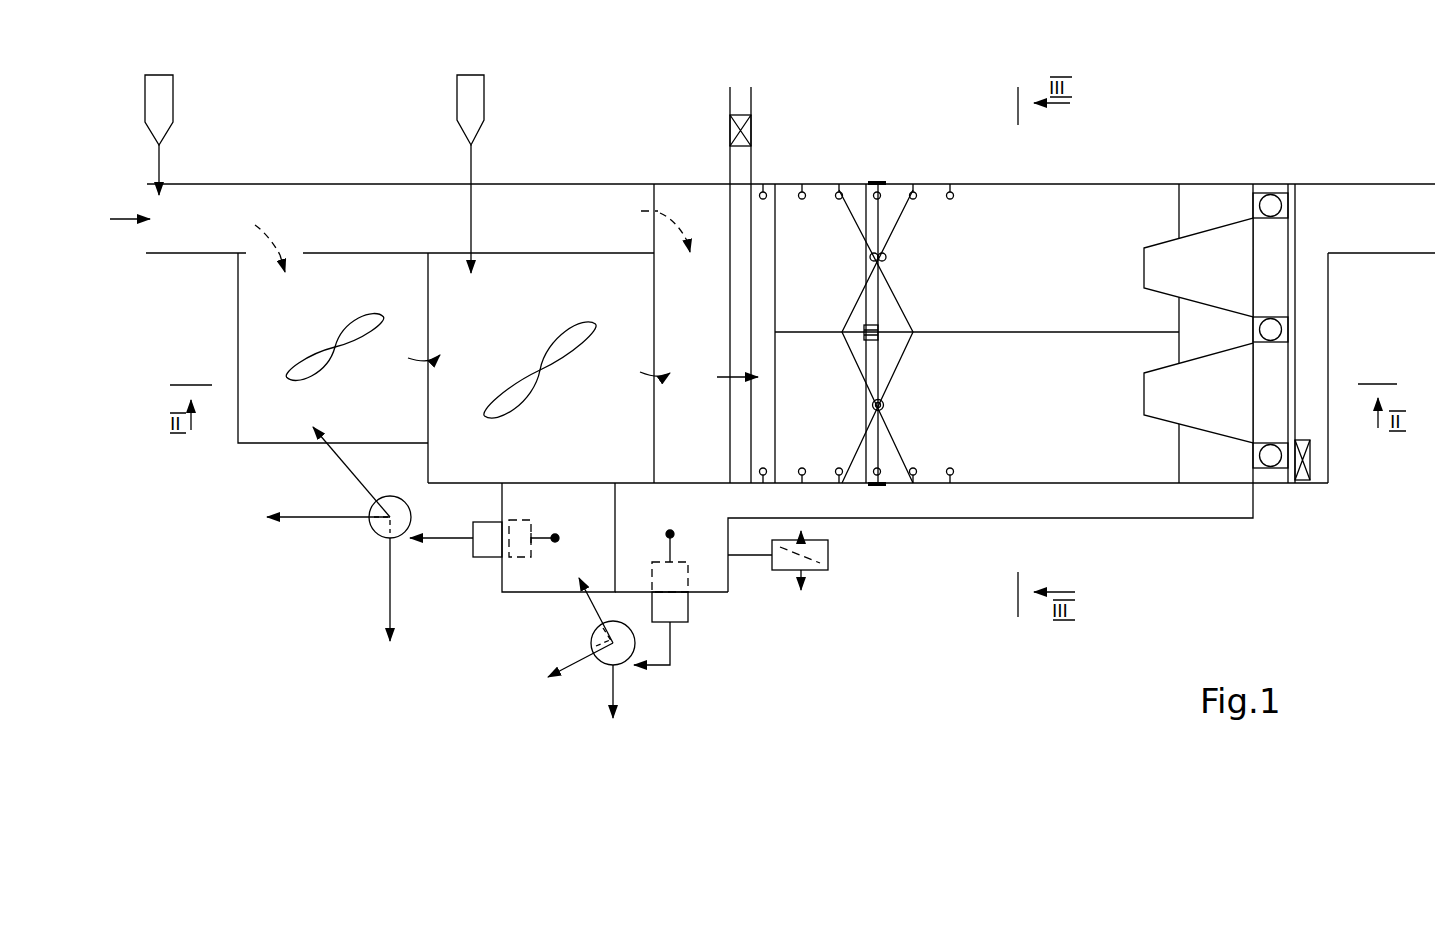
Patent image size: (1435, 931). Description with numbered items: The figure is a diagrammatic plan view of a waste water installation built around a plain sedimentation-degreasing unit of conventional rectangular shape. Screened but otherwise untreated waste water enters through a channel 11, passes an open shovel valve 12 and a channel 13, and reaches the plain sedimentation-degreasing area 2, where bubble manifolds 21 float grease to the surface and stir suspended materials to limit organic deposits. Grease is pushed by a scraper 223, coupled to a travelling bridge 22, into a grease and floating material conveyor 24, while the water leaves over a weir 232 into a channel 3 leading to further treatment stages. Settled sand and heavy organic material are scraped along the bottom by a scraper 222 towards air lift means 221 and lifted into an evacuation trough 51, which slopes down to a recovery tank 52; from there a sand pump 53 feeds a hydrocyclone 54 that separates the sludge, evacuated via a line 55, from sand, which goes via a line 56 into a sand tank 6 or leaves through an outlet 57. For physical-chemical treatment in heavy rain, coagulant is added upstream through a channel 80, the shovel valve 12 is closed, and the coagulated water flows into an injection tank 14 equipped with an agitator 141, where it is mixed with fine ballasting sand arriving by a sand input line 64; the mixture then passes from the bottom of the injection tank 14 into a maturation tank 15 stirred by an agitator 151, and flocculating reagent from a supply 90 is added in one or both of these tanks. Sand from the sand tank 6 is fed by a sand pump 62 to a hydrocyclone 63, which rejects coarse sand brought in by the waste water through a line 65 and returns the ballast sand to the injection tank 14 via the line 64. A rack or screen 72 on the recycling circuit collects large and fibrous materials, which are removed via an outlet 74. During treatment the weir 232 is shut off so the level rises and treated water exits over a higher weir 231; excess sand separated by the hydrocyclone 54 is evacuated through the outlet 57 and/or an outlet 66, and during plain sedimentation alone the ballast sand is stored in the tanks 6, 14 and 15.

The plain sedimentation-degreasing area 2 is at (1023, 307).
The channel 3 is at (1417, 214).
The sand tank 6 is at (601, 517).
The channel 11 is at (206, 217).
The shovel valve 12 is at (653, 206).
The channel 13 is at (704, 341).
The injection tank 14 is at (413, 293).
The maturation tank 15 is at (630, 293).
The bubble manifolds 21 is at (957, 195).
The travelling bridge 22 is at (880, 208).
The grease and floating material conveyor 24 is at (736, 205).
The evacuation trough 51 is at (1158, 505).
The recovery tank 52 is at (703, 518).
The sand pump 53 is at (680, 610).
The hydrocyclone 54 is at (606, 690).
The line 55 is at (623, 668).
The line 56 is at (590, 603).
The outlet 57 is at (570, 680).
The sand pump 62 is at (485, 545).
The hydrocyclone 63 is at (372, 540).
The sand input line 64 is at (343, 470).
The line 65 is at (388, 612).
The outlet 66 is at (302, 520).
The rack or screen 72 is at (830, 548).
The outlet 74 is at (812, 585).
The channel 80 is at (173, 103).
The supply 90 is at (484, 103).
The agitator 141 is at (368, 327).
The agitator 151 is at (583, 338).
The air lift 221 is at (888, 405).
The scraper 222 is at (898, 217).
The scraper 223 is at (863, 270).
The weir 231 is at (1183, 277).
The weir 232 is at (1212, 203).